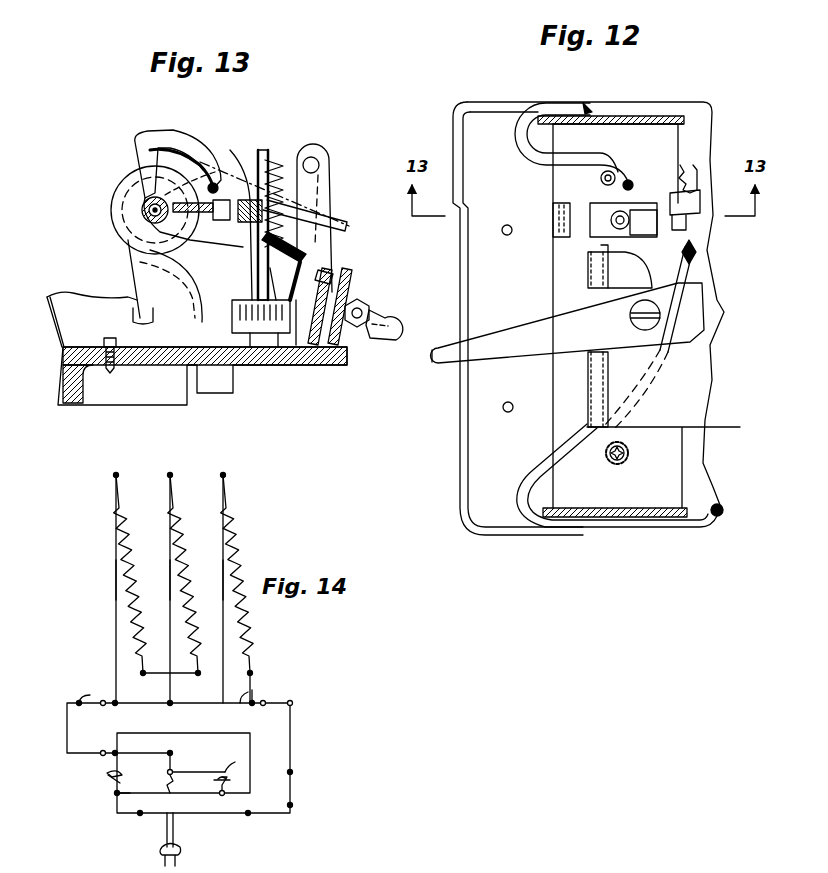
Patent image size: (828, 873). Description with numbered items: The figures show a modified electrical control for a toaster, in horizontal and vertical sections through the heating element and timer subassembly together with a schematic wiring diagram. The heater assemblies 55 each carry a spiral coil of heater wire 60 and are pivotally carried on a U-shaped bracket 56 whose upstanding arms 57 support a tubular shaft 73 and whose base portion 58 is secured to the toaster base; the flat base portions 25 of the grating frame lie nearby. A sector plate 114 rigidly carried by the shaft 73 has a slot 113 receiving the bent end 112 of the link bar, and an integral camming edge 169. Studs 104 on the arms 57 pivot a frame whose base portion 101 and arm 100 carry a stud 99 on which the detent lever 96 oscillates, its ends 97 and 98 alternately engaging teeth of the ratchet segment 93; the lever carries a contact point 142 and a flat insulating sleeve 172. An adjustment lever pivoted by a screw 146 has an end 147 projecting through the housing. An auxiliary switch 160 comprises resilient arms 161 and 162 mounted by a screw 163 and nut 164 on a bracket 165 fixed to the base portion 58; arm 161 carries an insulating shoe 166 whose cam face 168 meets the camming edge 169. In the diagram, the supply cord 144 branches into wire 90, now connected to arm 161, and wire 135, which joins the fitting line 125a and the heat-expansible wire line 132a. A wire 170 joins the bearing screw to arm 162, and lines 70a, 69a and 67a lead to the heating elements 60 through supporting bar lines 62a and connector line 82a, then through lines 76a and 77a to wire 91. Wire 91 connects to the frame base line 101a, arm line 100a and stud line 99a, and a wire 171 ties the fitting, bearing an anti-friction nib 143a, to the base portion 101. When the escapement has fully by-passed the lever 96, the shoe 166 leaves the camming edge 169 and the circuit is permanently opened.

In FIG. 12, the base portions 25 is at (603, 290).
In FIG. 14, the heater assemblies 55 is at (100, 510).
In FIG. 13, the U-shaped bracket 56 is at (128, 258).
In FIG. 13, the upstanding arms 57 is at (138, 273).
In FIG. 12, the upstanding arms 57 is at (642, 116).
In FIG. 13, the base portion 58 is at (212, 345).
In FIG. 14, the heater wire 60 is at (130, 566).
In FIG. 14, the line representing supporting bar 62a is at (116, 600).
In FIG. 14, the line representing bent end portion 67a is at (242, 708).
In FIG. 14, the line representing pivot pin 69a is at (255, 690).
In FIG. 14, the line representing bearing screw 70a is at (290, 700).
In FIG. 13, the tubular shaft 73 is at (140, 208).
In FIG. 14, the line representing pivot pin 76a is at (103, 700).
In FIG. 14, the line representing bearing screw 77a is at (86, 694).
In FIG. 14, the line representing connector strip 82a is at (197, 703).
In FIG. 12, the wire 90 is at (688, 530).
In FIG. 14, the wire 91 is at (67, 728).
In FIG. 13, the ratchet segment 93 is at (255, 195).
In FIG. 13, the detent lever 96 is at (300, 262).
In FIG. 14, the detent lever 96 is at (132, 784).
In FIG. 14, the end portion of detent lever 97 is at (108, 772).
In FIG. 12, the end portion of detent lever 98 is at (693, 168).
In FIG. 14, the end portion of detent lever 98 is at (228, 774).
In FIG. 13, the stud 99 is at (133, 316).
In FIG. 14, the line representing pivot stud 99a is at (172, 768).
In FIG. 13, the arm 100 is at (332, 275).
In FIG. 14, the line representing arm 100a is at (145, 746).
In FIG. 13, the base portion of frame 101 is at (322, 350).
In FIG. 14, the line representing frame base 101a is at (103, 750).
In FIG. 13, the studs 104 is at (320, 166).
In FIG. 13, the end of link bar 112 is at (210, 188).
In FIG. 13, the slot 113 is at (146, 138).
In FIG. 13, the sector plate 114 is at (147, 180).
In FIG. 14, the line representing fitting 125a is at (114, 796).
In FIG. 14, the line representing heat-expansible wire 132a is at (168, 795).
In FIG. 14, the wire 135 is at (140, 815).
In FIG. 14, the contact point 142 is at (106, 778).
In FIG. 13, the anti-friction nib 143a is at (348, 282).
In FIG. 14, the anti-friction nib 143a is at (220, 780).
In FIG. 14, the supply cord 144 is at (176, 838).
In FIG. 12, the screw 146 is at (631, 320).
In FIG. 12, the end of adjustment lever 147 is at (434, 362).
In FIG. 13, the auxiliary switch 160 is at (246, 265).
In FIG. 14, the auxiliary switch 160 is at (310, 808).
In FIG. 13, the switch arm 161 is at (250, 270).
In FIG. 12, the switch arm 161 is at (644, 240).
In FIG. 13, the switch arm 162 is at (285, 284).
In FIG. 12, the switch arm 162 is at (686, 226).
In FIG. 13, the screw 163 is at (298, 352).
In FIG. 13, the nut 164 is at (278, 360).
In FIG. 13, the bracket 165 is at (252, 360).
In FIG. 13, the insulating shoe 166 is at (266, 168).
In FIG. 13, the cam face 168 is at (240, 224).
In FIG. 13, the camming edge 169 is at (236, 175).
In FIG. 12, the wire 170 is at (528, 158).
In FIG. 14, the wire 170 is at (292, 728).
In FIG. 13, the wire 171 is at (378, 338).
In FIG. 14, the wire 171 is at (225, 756).
In FIG. 13, the insulating sleeve 172 is at (288, 255).
In FIG. 12, the insulating sleeve 172 is at (675, 195).